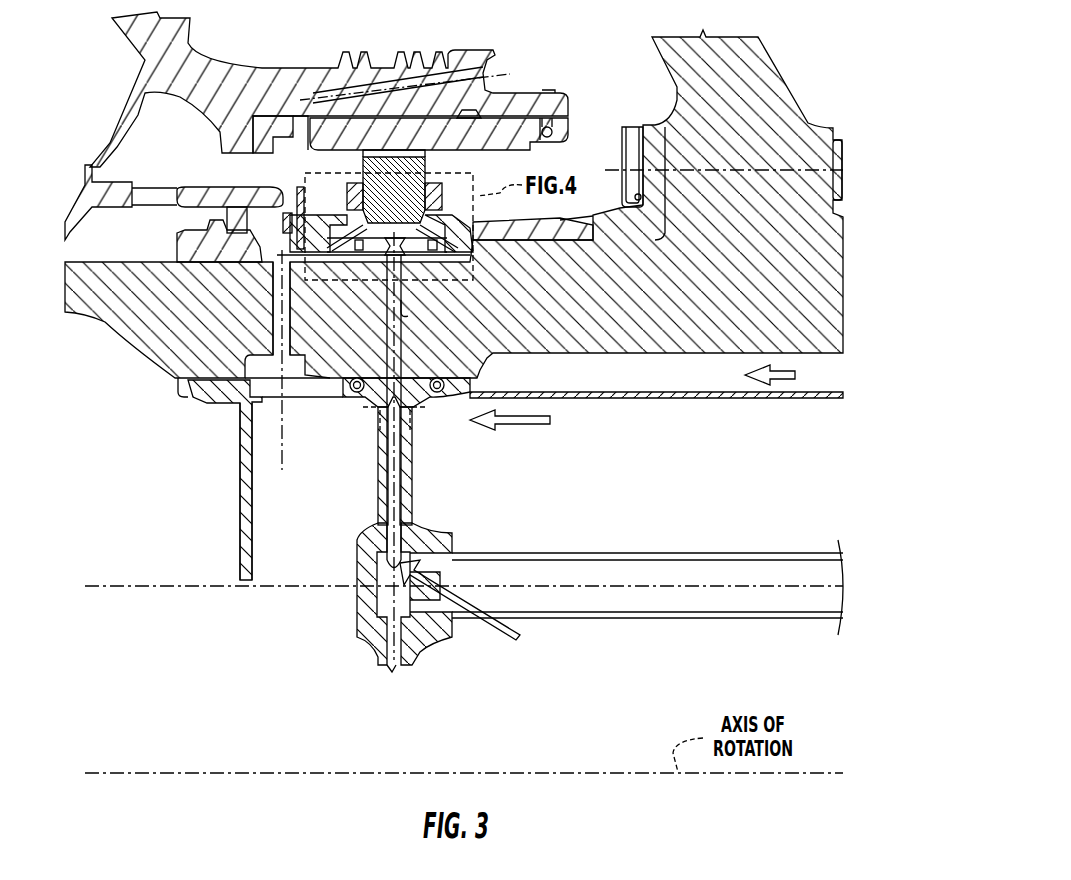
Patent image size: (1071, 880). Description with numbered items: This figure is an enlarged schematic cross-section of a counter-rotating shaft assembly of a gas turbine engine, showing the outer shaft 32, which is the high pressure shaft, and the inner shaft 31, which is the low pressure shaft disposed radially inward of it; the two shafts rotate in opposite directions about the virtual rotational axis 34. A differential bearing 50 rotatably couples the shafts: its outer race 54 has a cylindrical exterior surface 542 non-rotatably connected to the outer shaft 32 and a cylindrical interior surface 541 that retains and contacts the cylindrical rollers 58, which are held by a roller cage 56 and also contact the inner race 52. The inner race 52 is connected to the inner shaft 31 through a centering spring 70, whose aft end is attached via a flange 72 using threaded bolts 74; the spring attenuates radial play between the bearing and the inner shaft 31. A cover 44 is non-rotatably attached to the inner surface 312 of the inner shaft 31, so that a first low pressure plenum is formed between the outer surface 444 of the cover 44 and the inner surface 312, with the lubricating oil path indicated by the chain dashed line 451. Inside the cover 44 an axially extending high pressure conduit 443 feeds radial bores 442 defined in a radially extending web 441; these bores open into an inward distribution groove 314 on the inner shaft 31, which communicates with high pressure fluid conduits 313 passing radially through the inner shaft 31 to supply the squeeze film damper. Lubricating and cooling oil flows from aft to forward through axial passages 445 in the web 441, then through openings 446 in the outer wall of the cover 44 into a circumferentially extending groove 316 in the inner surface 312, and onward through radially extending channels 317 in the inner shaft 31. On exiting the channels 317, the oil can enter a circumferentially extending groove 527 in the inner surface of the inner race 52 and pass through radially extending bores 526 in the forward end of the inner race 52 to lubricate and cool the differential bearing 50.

The inner shaft 31 is at (168, 330).
The outer shaft 32 is at (262, 70).
The virtual rotational axis 34 is at (228, 772).
The cover 44 is at (233, 406).
The differential bearing 50 is at (367, 252).
The inner race 52 is at (466, 221).
The outer race 54 is at (530, 135).
The roller cage 56 is at (345, 203).
The cylindrical rollers 58 is at (404, 156).
The centering spring 70 is at (622, 208).
The flange 72 is at (658, 132).
The threaded bolts 74 is at (630, 140).
The inner surface of the inner shaft 312 is at (178, 396).
The high pressure fluid conduit 313 is at (403, 307).
The inward distribution groove 314 is at (418, 375).
The circumferentially extending groove 316 is at (257, 353).
The radially extending channels 317 is at (273, 290).
The radially extending web 441 is at (383, 494).
The radial bores 442 is at (392, 467).
The high pressure conduit 443 is at (608, 555).
The outer surface of the cover 444 is at (634, 392).
The axial passages 445 is at (415, 407).
The openings 446 is at (268, 398).
The chain dashed line 451 is at (530, 380).
The radially extending bores 526 is at (292, 214).
The circumferentially extending groove 527 is at (320, 268).
The cylindrical interior surface 541 is at (443, 155).
The cylindrical exterior surface 542 is at (327, 156).